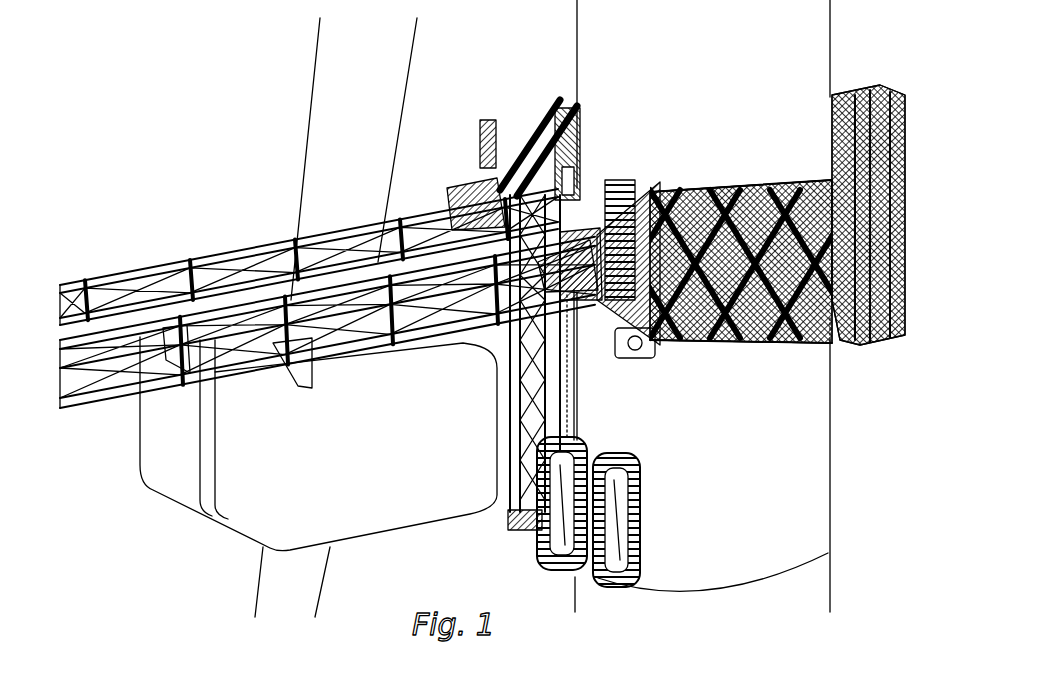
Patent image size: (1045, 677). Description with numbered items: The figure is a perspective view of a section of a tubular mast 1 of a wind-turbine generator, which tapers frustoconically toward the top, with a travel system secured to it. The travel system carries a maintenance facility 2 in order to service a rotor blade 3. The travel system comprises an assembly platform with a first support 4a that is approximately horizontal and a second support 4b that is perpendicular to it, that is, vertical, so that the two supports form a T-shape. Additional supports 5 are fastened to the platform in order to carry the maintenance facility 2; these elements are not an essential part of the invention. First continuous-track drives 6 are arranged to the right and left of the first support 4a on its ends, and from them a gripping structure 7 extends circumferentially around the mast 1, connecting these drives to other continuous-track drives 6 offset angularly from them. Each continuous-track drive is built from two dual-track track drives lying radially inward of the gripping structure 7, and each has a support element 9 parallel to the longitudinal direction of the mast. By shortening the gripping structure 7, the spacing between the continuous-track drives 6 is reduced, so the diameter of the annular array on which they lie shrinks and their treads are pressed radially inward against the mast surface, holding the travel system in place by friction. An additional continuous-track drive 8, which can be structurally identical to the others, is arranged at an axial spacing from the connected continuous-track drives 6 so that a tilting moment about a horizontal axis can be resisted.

The tubular mast 1 is at (800, 542).
The maintenance facility 2 is at (405, 460).
The rotor blade 3 is at (352, 201).
The first support 4a is at (593, 247).
The second support 4b is at (563, 396).
The additional supports 5 is at (205, 258).
The continuous-track drives 6 is at (585, 142).
The gripping structure 7 is at (535, 90).
The additional continuous-track drive 8 is at (655, 492).
The support element 9 is at (643, 367).